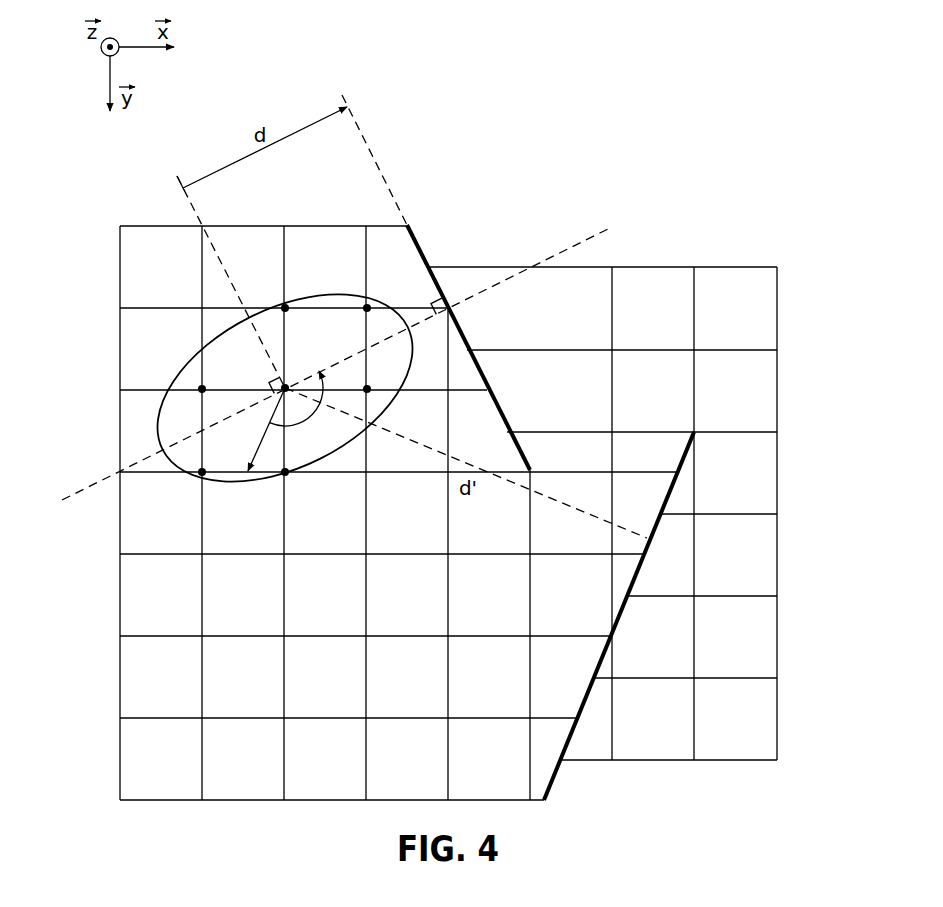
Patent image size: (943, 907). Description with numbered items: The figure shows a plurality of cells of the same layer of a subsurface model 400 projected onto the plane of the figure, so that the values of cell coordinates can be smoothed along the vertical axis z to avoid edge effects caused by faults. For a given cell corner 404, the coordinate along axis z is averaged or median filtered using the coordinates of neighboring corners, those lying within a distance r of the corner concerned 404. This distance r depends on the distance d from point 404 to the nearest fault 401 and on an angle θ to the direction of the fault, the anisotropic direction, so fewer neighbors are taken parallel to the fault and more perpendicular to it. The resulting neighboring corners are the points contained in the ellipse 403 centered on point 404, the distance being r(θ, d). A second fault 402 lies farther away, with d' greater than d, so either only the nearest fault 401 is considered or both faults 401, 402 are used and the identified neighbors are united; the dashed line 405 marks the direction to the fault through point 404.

The subsurface model 400 is at (674, 198).
The fault 401 is at (413, 237).
The fault 402 is at (554, 778).
The ellipse 403 is at (185, 368).
The cell corner 404 is at (283, 388).
The normal line 405 is at (580, 243).